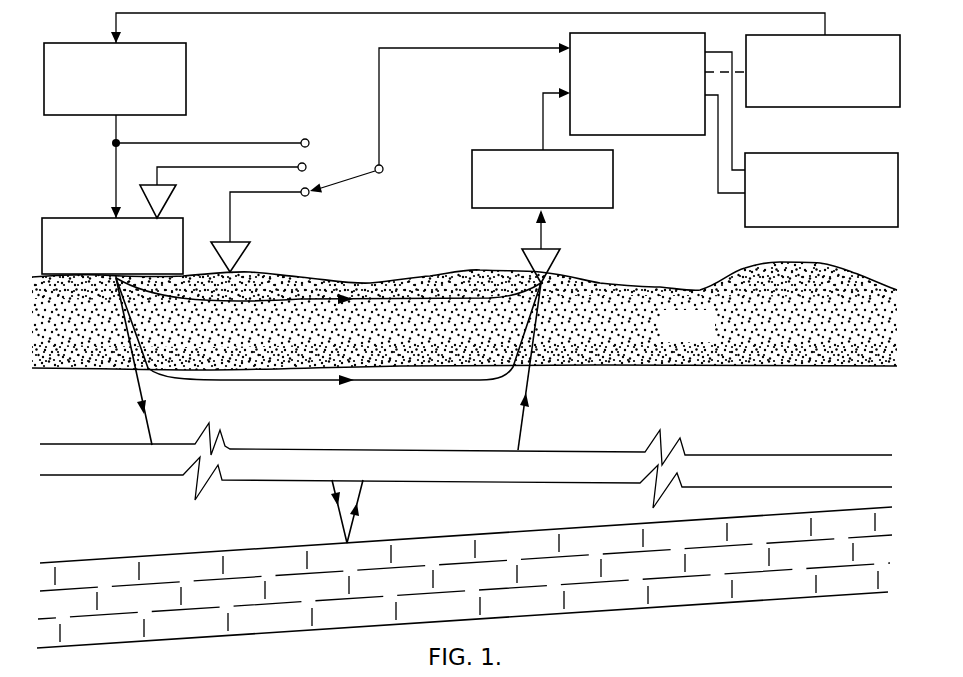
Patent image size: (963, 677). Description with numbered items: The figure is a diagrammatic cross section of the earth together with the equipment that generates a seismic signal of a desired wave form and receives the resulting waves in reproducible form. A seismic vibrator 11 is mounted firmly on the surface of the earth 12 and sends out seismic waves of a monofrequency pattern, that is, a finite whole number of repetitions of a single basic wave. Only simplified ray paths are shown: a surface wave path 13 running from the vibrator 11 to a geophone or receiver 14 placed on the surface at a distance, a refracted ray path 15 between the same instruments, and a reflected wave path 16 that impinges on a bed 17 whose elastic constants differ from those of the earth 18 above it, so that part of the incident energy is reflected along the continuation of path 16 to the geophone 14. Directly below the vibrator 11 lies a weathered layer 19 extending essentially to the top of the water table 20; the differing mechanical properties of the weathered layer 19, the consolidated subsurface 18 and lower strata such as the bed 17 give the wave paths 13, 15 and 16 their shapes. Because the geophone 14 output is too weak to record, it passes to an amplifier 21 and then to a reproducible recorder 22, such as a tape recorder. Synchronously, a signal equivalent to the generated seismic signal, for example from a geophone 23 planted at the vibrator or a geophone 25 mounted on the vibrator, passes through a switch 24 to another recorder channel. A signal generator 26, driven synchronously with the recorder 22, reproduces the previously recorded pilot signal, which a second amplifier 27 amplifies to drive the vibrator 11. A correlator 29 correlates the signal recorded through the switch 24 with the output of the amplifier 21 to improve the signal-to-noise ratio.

The seismic vibrator 11 is at (100, 218).
The surface of the earth 12 is at (375, 285).
The surface wave path 13 is at (273, 303).
The geophone or receiver 14 is at (551, 263).
The refracted ray path 15 is at (257, 383).
The reflected wave path 16 is at (143, 417).
The bed 17 is at (463, 582).
The earth above the bed 18 is at (526, 522).
The weathered layer 19 is at (701, 337).
The water table 20 is at (697, 367).
The amplifier 21 is at (530, 150).
The reproducible recorder 22 is at (630, 137).
The geophone 23 is at (241, 258).
The switch 24 is at (382, 173).
The geophone 25 is at (167, 201).
The signal generator 26 is at (803, 108).
The second amplifier 27 is at (186, 82).
The correlator 29 is at (780, 227).